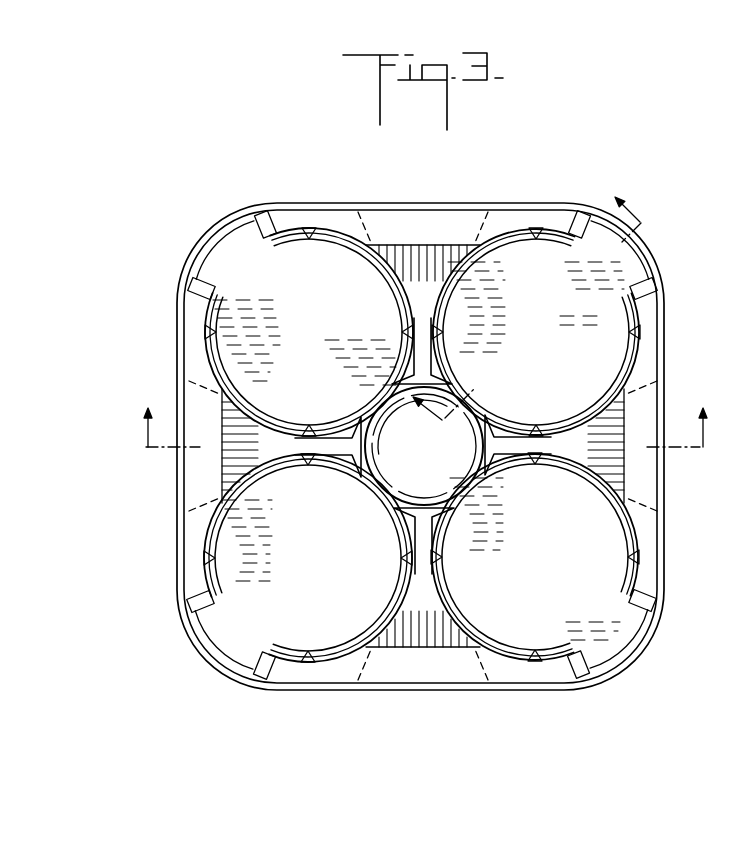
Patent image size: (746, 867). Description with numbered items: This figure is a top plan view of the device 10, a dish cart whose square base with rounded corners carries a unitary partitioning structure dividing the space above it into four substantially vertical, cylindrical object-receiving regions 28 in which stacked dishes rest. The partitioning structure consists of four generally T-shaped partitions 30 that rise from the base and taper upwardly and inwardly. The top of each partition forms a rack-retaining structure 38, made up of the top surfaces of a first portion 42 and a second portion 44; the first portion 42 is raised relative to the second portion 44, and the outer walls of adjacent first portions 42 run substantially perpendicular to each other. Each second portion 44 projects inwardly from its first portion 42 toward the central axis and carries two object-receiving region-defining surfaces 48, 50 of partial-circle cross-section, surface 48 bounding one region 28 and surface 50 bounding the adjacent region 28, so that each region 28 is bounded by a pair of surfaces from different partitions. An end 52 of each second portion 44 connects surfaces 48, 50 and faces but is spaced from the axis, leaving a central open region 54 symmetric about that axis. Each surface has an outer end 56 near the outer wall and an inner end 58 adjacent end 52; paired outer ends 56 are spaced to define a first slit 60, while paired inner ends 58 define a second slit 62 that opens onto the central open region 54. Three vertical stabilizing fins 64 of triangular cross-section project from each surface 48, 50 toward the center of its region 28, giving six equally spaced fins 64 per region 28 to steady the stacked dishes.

The device 10 is at (248, 170).
The object-receiving region 28 is at (300, 316).
The generally T-shaped partition 30 is at (353, 213).
The rack-retaining structure 38 is at (421, 218).
The first portion 42 is at (476, 210).
The second portion 44 is at (438, 248).
The object-receiving region-defining surface 48 is at (482, 252).
The object-receiving region-defining surface 50 is at (366, 251).
The end 52 is at (495, 446).
The central open region 54 is at (411, 464).
The outer end 56 is at (254, 228).
The inner end 58 is at (496, 424).
The first slit 60 is at (236, 255).
The second slit 62 is at (374, 400).
The vertical stabilizing fin 64 is at (536, 230).